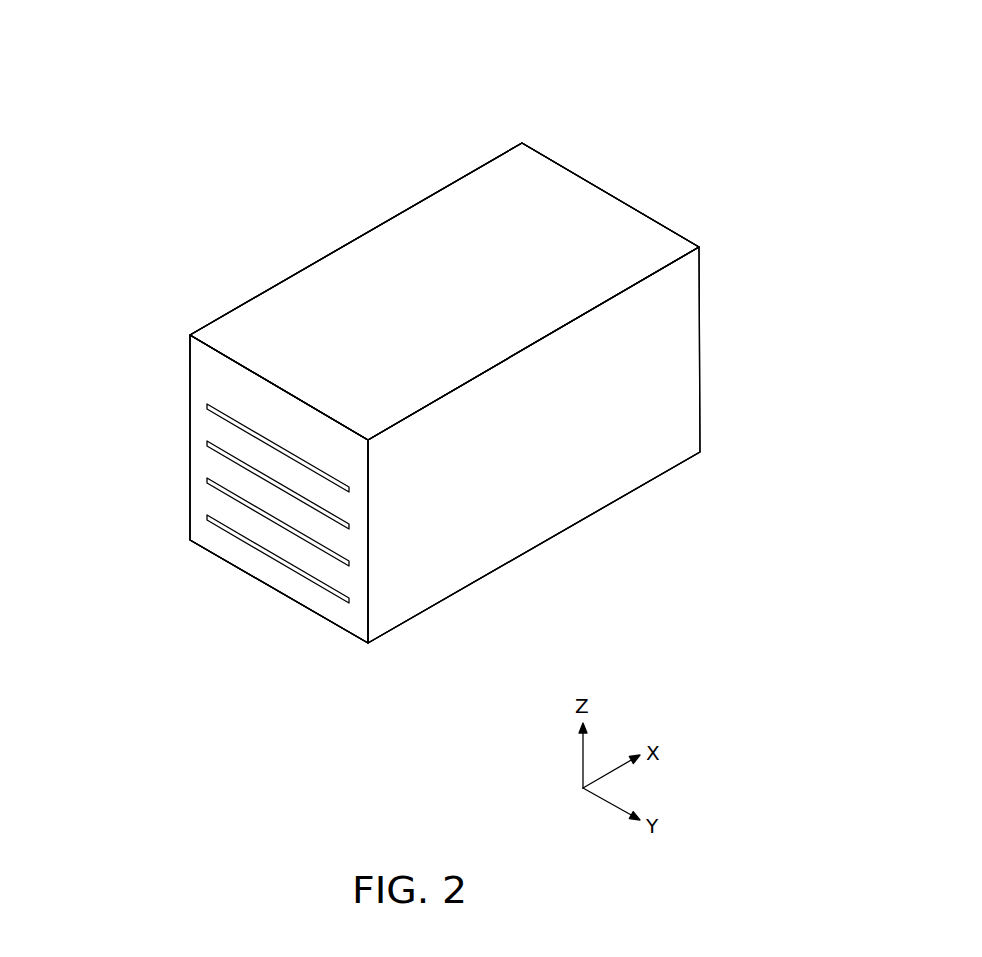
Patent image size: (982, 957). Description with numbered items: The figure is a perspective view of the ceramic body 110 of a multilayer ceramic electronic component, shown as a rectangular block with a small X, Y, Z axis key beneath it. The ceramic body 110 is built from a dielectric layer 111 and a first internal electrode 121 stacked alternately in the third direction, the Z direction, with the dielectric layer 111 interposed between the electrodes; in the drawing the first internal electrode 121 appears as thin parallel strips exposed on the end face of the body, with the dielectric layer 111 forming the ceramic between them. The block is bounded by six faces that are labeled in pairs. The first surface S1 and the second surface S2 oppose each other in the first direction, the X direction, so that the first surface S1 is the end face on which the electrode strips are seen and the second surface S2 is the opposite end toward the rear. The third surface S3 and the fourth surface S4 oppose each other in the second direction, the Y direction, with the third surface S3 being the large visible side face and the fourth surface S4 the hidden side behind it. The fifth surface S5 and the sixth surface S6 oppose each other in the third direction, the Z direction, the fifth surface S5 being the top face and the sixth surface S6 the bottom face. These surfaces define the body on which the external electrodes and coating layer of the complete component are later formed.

The ceramic body 110 is at (205, 57).
The dielectric layer 111 is at (196, 476).
The first internal electrode 121 is at (218, 418).
The first surface S1 is at (266, 514).
The second surface S2 is at (614, 240).
The third surface S3 is at (666, 381).
The fourth surface S4 is at (300, 306).
The fifth surface S5 is at (446, 224).
The sixth surface S6 is at (502, 532).